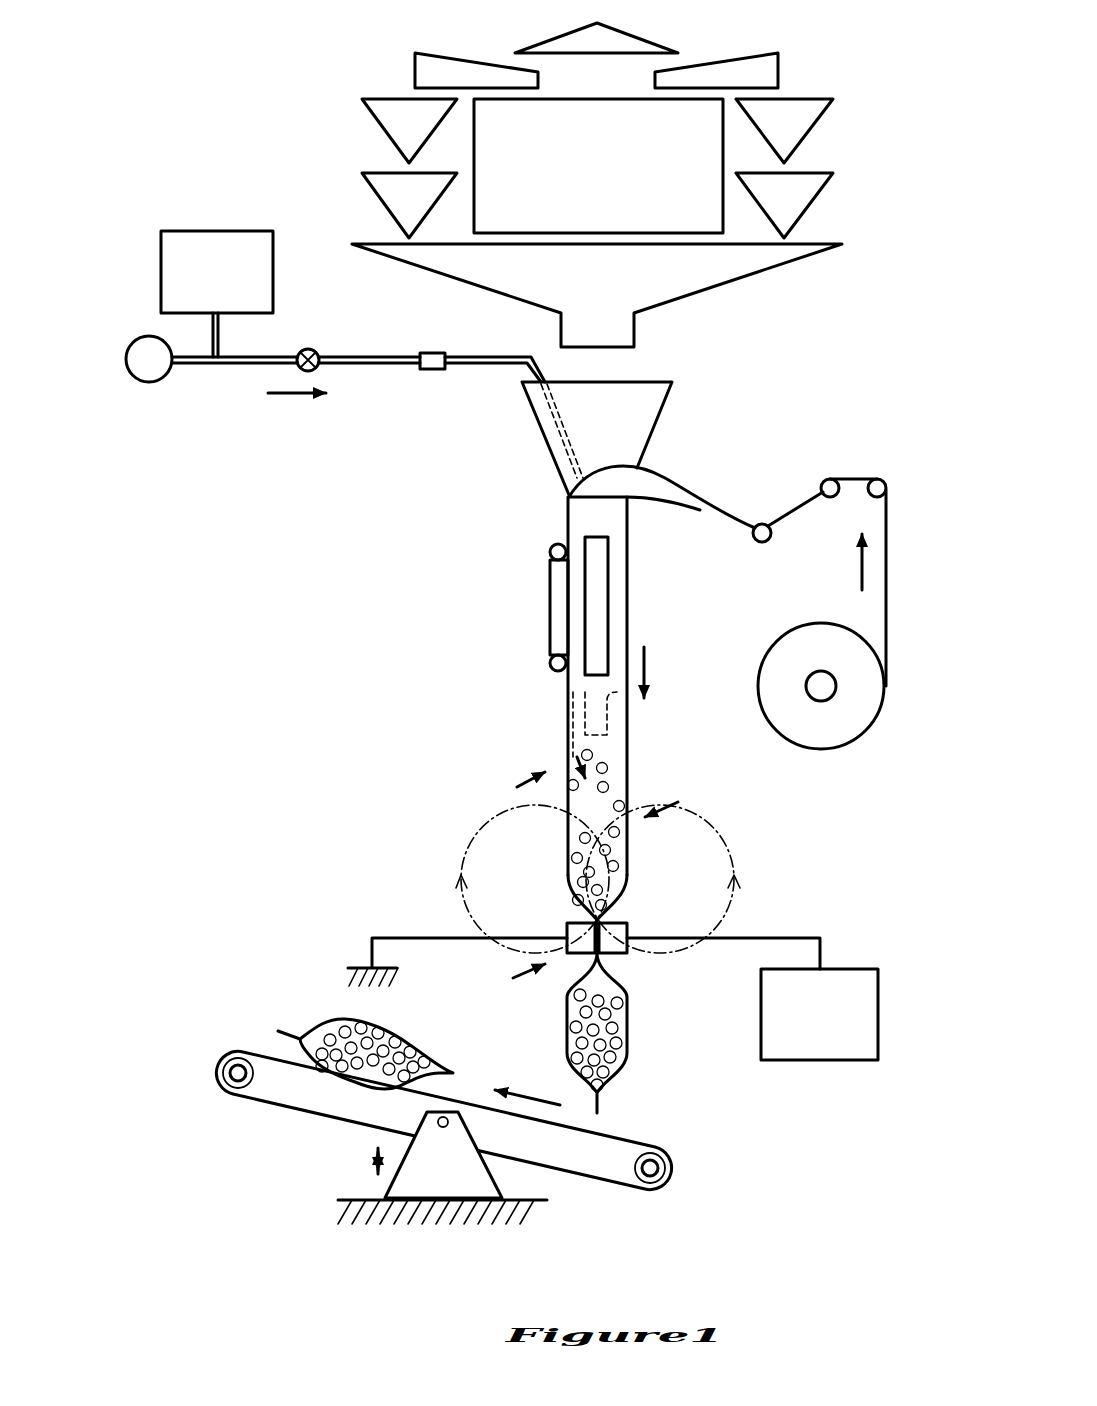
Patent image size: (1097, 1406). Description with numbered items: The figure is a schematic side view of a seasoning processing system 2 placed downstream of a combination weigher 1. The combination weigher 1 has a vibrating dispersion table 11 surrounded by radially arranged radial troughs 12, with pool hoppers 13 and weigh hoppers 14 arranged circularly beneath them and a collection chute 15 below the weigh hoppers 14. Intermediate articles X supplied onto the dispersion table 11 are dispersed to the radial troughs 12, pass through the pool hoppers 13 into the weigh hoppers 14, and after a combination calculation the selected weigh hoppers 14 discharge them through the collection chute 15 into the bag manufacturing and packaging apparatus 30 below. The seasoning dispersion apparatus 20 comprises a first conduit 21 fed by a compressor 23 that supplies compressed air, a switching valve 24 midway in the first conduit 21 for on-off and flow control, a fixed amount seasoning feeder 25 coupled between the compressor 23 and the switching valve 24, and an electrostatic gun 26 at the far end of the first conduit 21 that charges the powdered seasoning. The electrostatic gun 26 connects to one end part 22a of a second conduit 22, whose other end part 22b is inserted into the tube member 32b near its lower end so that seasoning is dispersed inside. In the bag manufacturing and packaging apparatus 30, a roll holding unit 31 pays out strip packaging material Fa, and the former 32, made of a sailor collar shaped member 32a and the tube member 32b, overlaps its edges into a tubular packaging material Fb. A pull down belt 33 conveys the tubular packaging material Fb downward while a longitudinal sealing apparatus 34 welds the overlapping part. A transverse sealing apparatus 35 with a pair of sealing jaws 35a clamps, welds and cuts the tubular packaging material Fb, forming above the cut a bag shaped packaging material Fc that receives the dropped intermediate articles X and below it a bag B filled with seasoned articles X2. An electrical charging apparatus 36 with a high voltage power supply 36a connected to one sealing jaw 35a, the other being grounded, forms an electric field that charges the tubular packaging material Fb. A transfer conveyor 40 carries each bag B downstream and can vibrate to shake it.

The combination weigher 1 is at (315, 45).
The seasoning processing system 2 is at (350, 543).
The dispersion table 11 is at (657, 43).
The radial trough 12 is at (415, 70).
The pool hopper 13 is at (390, 98).
The weigh hopper 14 is at (380, 173).
The collection chute 15 is at (755, 277).
The seasoning dispersion apparatus 20 is at (158, 405).
The first conduit 21 is at (243, 365).
The second conduit 22 is at (490, 357).
The one end part of the second conduit 22a is at (457, 366).
The other end part of the second conduit 22b is at (568, 753).
The compressor 23 is at (143, 337).
The switching valve 24 is at (312, 350).
The fixed amount seasoning feeder 25 is at (175, 230).
The electrostatic gun 26 is at (430, 360).
The bag manufacturing and packaging apparatus 30 is at (785, 413).
The roll holding unit 31 is at (791, 752).
The former 32 is at (659, 377).
The sailor collar shaped member 32a is at (643, 490).
The tube member 32b is at (643, 428).
The pull down belt 33 is at (613, 640).
The longitudinal sealing apparatus 34 is at (548, 608).
The transverse sealing apparatus 35 is at (485, 887).
The sealing jaw 35a is at (566, 935).
The electrical charging apparatus 36 is at (840, 957).
The high voltage power supply 36a is at (800, 1063).
The transfer conveyor 40 is at (300, 1132).
The bag B is at (633, 1049).
The intermediate article X is at (609, 786).
The seasoned article X2 is at (622, 1000).
The strip packaging material Fa is at (732, 520).
The tubular packaging material Fb is at (565, 517).
The bag shaped packaging material Fc is at (630, 873).